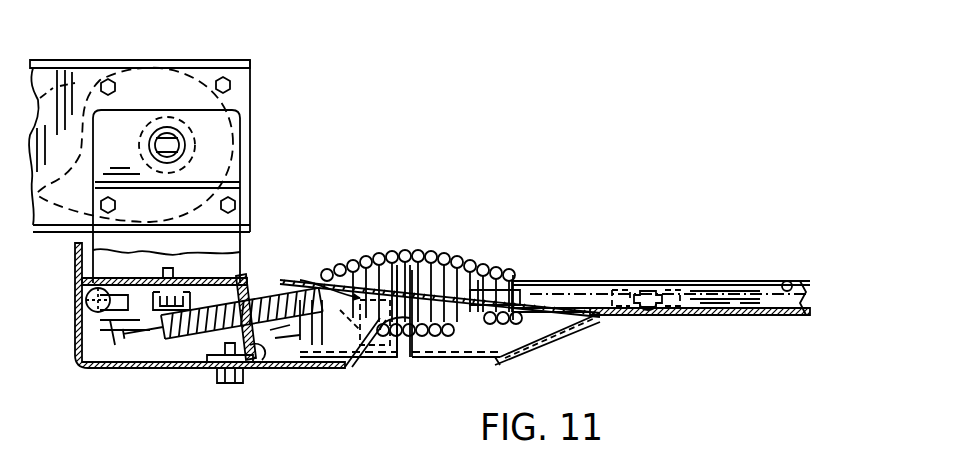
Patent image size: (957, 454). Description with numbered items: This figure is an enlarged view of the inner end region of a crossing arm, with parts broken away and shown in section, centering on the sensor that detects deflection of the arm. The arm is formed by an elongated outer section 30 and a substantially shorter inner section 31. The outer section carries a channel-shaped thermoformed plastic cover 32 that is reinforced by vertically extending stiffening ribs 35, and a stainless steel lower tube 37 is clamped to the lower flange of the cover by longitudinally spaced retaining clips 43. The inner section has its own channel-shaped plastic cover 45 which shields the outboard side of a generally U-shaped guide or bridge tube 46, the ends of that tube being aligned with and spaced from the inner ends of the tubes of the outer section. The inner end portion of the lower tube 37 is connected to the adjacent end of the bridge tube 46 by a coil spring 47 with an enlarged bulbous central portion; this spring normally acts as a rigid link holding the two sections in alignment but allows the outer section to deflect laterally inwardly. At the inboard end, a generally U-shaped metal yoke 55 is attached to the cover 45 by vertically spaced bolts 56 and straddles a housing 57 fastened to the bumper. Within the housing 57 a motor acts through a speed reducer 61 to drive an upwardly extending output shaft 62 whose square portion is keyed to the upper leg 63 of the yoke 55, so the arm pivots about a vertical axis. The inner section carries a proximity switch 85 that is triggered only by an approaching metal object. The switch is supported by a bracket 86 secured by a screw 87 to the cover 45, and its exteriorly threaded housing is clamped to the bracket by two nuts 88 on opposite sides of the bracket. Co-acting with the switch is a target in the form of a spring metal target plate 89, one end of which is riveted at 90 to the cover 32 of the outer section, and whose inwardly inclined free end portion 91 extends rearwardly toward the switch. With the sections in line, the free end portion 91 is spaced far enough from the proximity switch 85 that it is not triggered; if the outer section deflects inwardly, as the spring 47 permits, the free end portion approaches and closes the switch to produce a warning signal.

The outer section 30 is at (752, 282).
The inner section 31 is at (341, 366).
The cover 32 is at (730, 320).
The stiffening ribs 35 is at (452, 335).
The lower tube 37 is at (714, 282).
The retaining clips 43 is at (647, 290).
The cover 45 is at (146, 368).
The bridge tube 46 is at (80, 290).
The coil spring 47 is at (432, 268).
The yoke 55 is at (92, 135).
The bolts 56 is at (168, 270).
The housing 57 is at (200, 76).
The speed reducer 61 is at (150, 68).
The output shaft 62 is at (170, 145).
The upper leg 63 is at (242, 160).
The proximity switch 85 is at (262, 290).
The bracket 86 is at (262, 358).
The screw 87 is at (230, 383).
The nuts 88 is at (232, 270).
The target plate 89 is at (490, 292).
The rivet 90 is at (482, 328).
The free end portion 91 is at (336, 280).